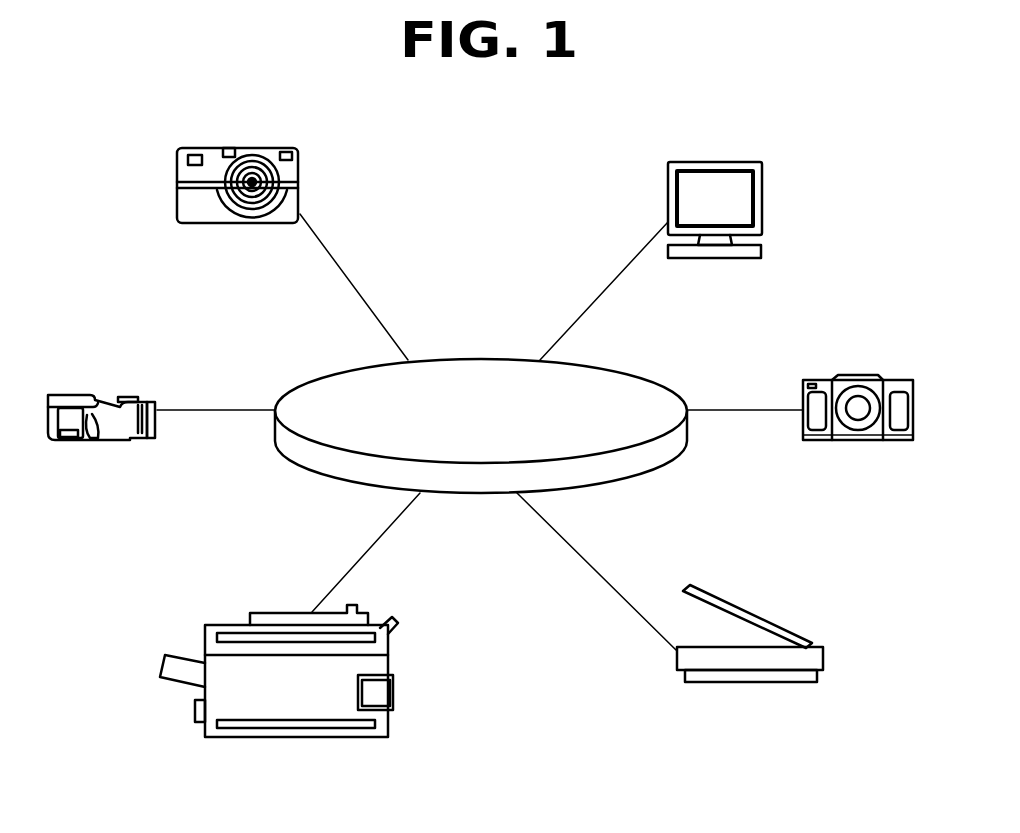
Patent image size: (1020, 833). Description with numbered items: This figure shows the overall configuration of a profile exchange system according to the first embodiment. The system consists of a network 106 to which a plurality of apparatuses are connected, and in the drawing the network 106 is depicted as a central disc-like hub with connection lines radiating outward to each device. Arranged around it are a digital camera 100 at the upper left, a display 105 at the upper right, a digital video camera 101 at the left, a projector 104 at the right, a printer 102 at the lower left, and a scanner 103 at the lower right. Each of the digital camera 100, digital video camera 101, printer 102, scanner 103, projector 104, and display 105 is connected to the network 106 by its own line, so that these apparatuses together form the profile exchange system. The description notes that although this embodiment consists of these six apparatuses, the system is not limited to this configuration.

The digital camera 100 is at (247, 148).
The digital video camera 101 is at (86, 395).
The printer 102 is at (263, 612).
The scanner 103 is at (760, 618).
The projector 104 is at (858, 375).
The display 105 is at (715, 161).
The network 106 is at (473, 358).